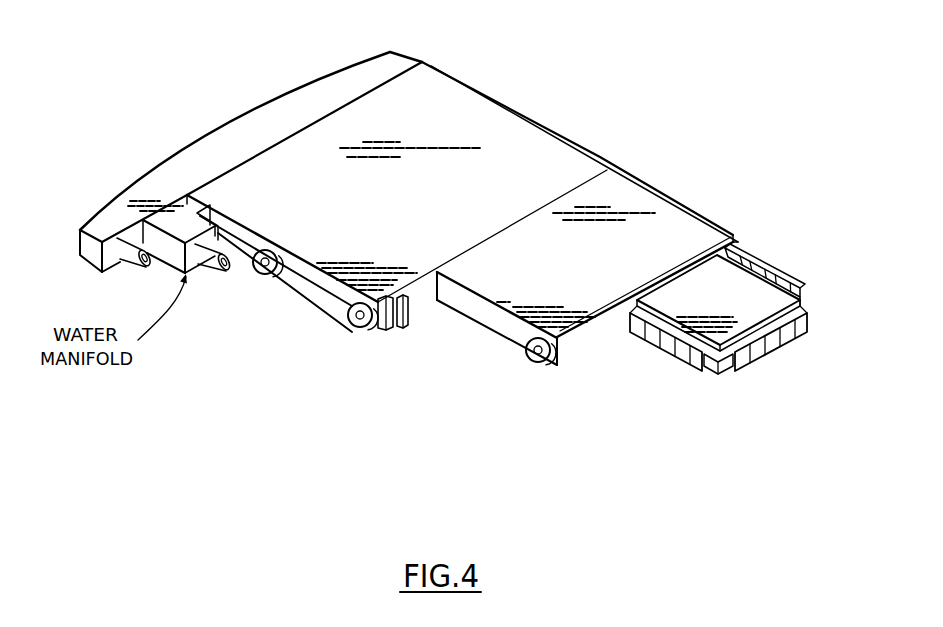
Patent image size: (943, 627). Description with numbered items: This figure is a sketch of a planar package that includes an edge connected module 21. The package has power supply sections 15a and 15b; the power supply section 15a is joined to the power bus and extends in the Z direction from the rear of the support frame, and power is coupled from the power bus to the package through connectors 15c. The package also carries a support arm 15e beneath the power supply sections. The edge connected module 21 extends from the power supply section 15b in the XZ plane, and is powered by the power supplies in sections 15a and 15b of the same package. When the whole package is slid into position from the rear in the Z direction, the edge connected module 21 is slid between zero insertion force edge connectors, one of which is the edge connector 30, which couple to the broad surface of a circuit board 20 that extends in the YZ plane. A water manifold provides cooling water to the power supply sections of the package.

The power supply section 15a is at (510, 127).
The power supply section 15b is at (650, 205).
The connector 15c is at (397, 332).
The roller support arm 15e is at (330, 307).
The circuit board 20 is at (683, 362).
The edge connected module 21 is at (725, 265).
The edge connected output connector 30 is at (792, 283).